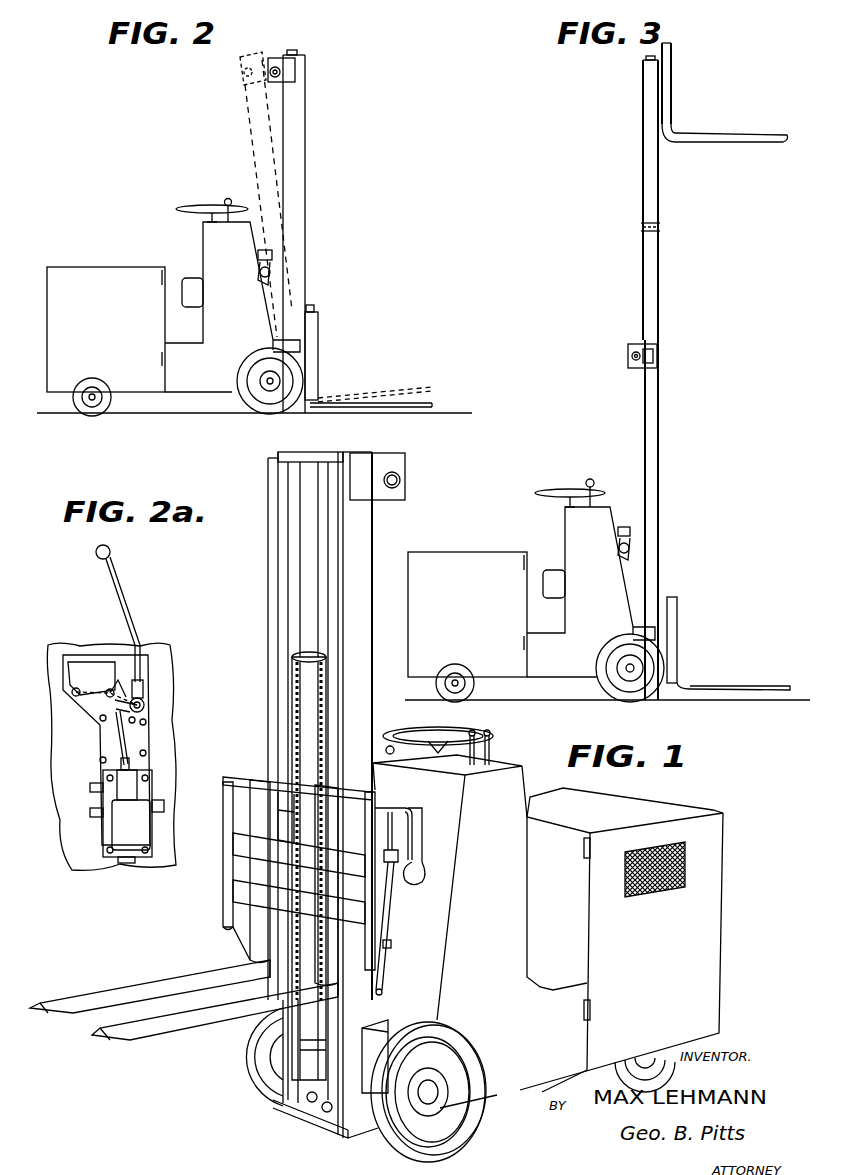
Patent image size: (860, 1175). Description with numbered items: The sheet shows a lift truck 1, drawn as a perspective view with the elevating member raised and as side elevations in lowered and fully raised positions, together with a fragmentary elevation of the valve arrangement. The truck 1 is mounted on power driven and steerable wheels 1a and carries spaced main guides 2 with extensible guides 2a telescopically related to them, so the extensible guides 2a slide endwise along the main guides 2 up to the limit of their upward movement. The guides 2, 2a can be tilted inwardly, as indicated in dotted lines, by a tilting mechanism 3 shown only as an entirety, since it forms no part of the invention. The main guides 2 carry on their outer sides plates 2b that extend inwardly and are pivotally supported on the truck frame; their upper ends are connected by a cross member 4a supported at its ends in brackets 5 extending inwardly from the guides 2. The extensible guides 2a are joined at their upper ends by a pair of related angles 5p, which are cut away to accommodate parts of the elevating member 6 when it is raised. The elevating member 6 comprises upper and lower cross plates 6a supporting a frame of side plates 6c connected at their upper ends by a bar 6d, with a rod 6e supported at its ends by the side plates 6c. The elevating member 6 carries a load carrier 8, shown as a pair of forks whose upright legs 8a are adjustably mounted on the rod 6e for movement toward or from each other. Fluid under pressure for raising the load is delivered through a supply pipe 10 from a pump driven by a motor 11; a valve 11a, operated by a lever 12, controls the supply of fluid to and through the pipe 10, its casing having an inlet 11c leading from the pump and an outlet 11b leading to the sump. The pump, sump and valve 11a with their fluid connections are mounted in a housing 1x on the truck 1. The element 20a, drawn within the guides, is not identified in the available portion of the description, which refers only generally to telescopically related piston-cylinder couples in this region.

In FIG. 2, the truck 1 is at (160, 307).
In FIG. 3, the truck 1 is at (520, 592).
In FIG. 1, the truck 1 is at (636, 1004).
In FIG. 2, the wheels 1a is at (85, 418).
In FIG. 3, the wheels 1a is at (470, 692).
In FIG. 1, the wheels 1a is at (452, 1142).
In FIG. 2A, the housing 1x is at (155, 713).
In FIG. 1, the housing 1x is at (508, 810).
In FIG. 2, the main guides 2 is at (297, 196).
In FIG. 3, the main guides 2 is at (657, 448).
In FIG. 1, the main guides 2 is at (360, 536).
In FIG. 3, the extensible guides 2a is at (655, 284).
In FIG. 1, the extensible guides 2a is at (285, 494).
In FIG. 2, the plates 2b is at (270, 340).
In FIG. 3, the plates 2b is at (644, 633).
In FIG. 1, the plates 2b is at (388, 1030).
In FIG. 2, the tilting mechanism 3 is at (258, 283).
In FIG. 3, the tilting mechanism 3 is at (624, 543).
In FIG. 1, the cross member 4a is at (400, 482).
In FIG. 2, the brackets 5 is at (368, 356).
In FIG. 3, the brackets 5 is at (658, 354).
In FIG. 1, the brackets 5 is at (400, 500).
In FIG. 1, the related angles 5p is at (310, 458).
In FIG. 3, the elevating member 6 is at (702, 641).
In FIG. 1, the cross plates 6a is at (240, 890).
In FIG. 1, the side plates 6c is at (233, 838).
In FIG. 1, the bar 6d is at (252, 780).
In FIG. 1, the rod 6e is at (223, 785).
In FIG. 1, the load carrier 8 is at (185, 1060).
In FIG. 1, the upright legs 8a is at (250, 930).
In FIG. 2A, the supply pipe 10 is at (163, 804).
In FIG. 1, the supply pipe 10 is at (390, 920).
In FIG. 2, the motor 11 is at (192, 278).
In FIG. 3, the motor 11 is at (557, 570).
In FIG. 2, the valve 11a is at (230, 222).
In FIG. 3, the valve 11a is at (622, 483).
In FIG. 2A, the valve 11a is at (92, 762).
In FIG. 1, the valve 11a is at (488, 752).
In FIG. 2A, the outlet 11b is at (90, 790).
In FIG. 2A, the inlet 11c is at (90, 815).
In FIG. 2A, the lever 12 is at (130, 615).
In FIG. 1, the lever 12 is at (482, 768).
In FIG. 1, the hydraulic cylinder 20a is at (330, 722).